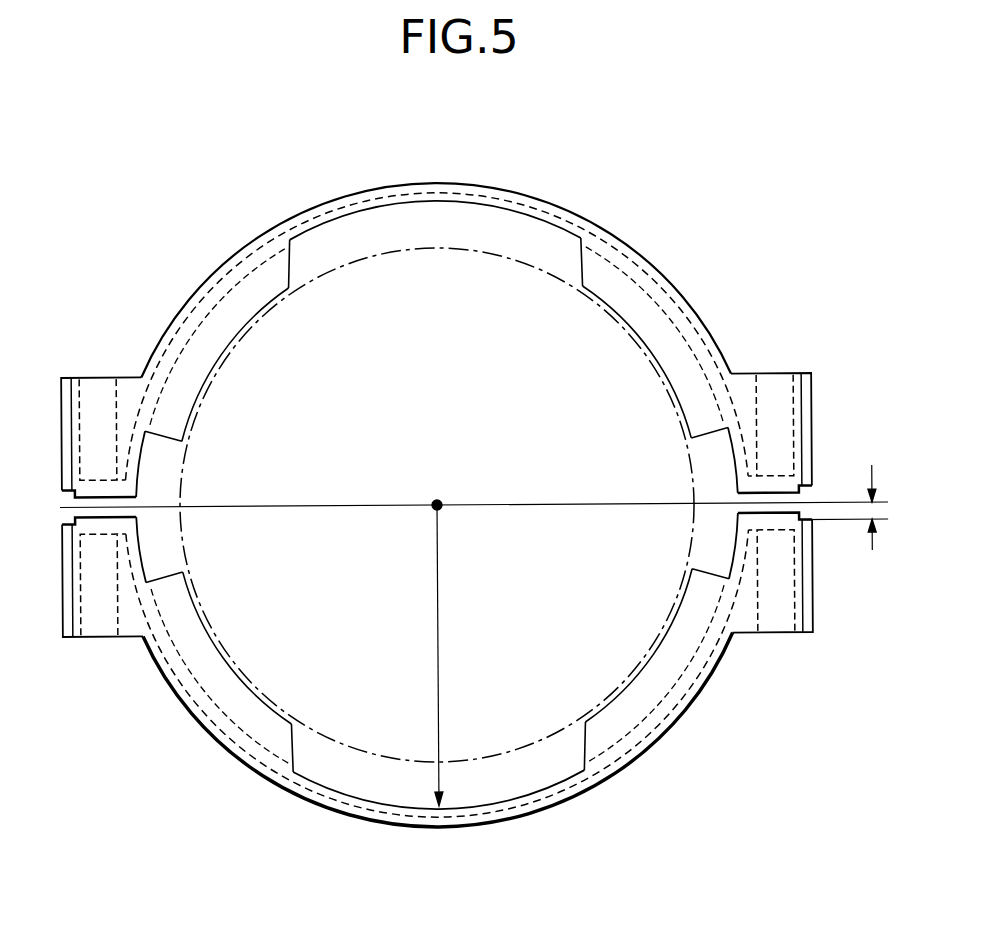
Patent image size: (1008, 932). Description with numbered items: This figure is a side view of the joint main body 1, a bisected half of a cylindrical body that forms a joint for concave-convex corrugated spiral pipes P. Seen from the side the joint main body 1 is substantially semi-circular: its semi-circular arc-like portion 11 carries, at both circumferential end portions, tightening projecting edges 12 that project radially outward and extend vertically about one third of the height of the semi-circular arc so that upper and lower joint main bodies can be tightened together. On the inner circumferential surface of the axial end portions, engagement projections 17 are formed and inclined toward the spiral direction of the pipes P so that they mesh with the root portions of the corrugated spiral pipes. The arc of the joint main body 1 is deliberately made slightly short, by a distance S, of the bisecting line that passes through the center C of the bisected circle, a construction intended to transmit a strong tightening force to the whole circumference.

The joint main body 1 is at (704, 276).
The semi-circular arc-like portion 11 is at (508, 188).
The tightening projecting edge 12 is at (93, 392).
The engagement projection 17 is at (250, 297).
The center of the bisected circle C is at (474, 487).
The distance S is at (855, 508).
The concave-convex corrugated spiral pipe P is at (490, 787).